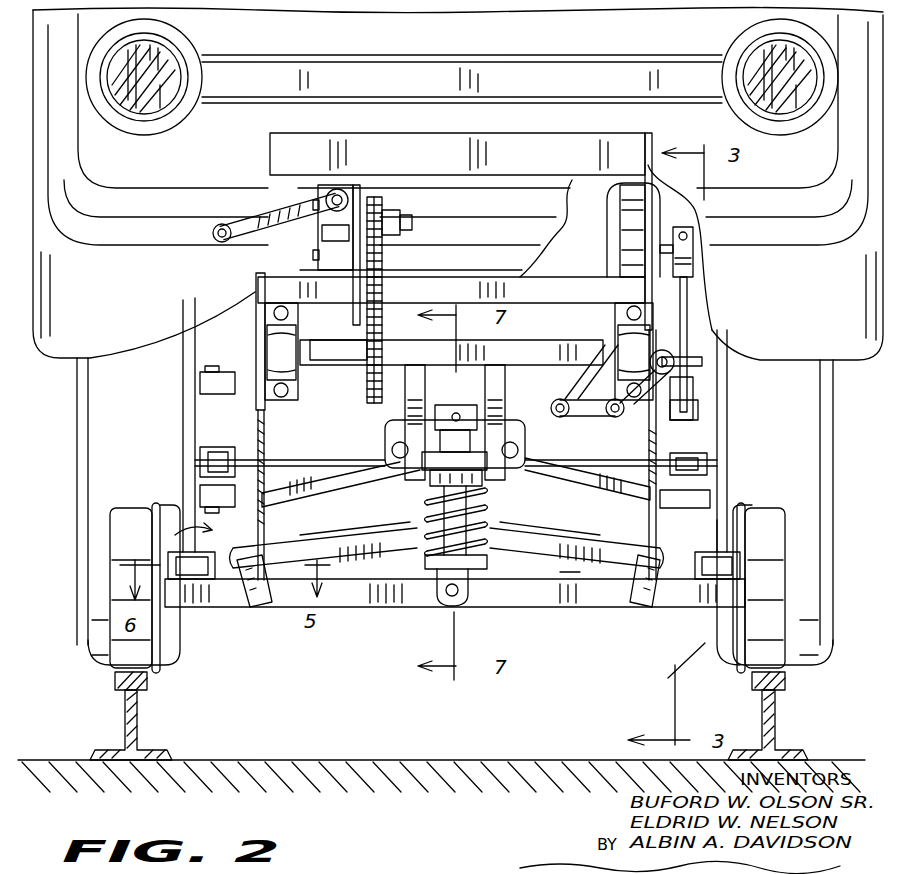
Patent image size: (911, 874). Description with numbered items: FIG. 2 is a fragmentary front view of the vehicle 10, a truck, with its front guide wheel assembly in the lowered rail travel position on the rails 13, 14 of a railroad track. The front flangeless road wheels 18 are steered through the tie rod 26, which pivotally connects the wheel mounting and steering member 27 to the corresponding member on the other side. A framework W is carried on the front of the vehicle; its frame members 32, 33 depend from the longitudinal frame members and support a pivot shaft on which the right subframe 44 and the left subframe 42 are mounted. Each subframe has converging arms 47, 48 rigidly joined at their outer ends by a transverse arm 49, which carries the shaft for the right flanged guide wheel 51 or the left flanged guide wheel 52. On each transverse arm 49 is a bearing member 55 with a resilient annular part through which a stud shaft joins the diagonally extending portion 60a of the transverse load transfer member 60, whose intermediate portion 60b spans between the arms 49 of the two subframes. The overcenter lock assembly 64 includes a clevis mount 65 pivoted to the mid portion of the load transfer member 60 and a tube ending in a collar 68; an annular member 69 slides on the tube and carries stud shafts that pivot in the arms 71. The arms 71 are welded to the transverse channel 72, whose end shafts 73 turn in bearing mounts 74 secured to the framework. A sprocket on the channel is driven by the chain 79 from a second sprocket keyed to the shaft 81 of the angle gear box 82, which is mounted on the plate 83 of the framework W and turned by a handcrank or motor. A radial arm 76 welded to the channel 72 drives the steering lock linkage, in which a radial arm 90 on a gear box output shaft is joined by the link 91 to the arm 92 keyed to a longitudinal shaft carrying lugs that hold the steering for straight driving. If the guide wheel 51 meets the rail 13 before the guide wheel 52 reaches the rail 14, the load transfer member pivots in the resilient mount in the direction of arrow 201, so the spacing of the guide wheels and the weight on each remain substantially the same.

The vehicle 10 is at (38, 360).
The rail 13 is at (125, 715).
The rail 14 is at (778, 715).
The front flangeless road wheels 18 is at (133, 404).
The tie rod 26 is at (308, 462).
The wheel mounting and steering member 27 is at (205, 425).
The frame member 32 is at (268, 448).
The frame member 33 is at (718, 520).
The left subframe 42 is at (560, 535).
The right subframe 44 is at (342, 528).
The arm 47 is at (575, 573).
The arm 48 is at (280, 545).
The transverse arm 49 is at (215, 606).
The right flanged guide wheel 51 is at (120, 528).
The flanged guide wheel 52 is at (835, 560).
The bearing member 55 is at (735, 555).
The transverse load transfer member 60 is at (600, 606).
The diagonally extending portion 60a is at (265, 606).
The intermediate portion 60b is at (395, 606).
The overcenter lock assembly 64 is at (488, 512).
The clevis mount 65 is at (468, 606).
The collar 68 is at (472, 410).
The annular member 69 is at (425, 476).
The arm 71 is at (405, 412).
The transverse channel 72 is at (575, 340).
The transverse shaft 73 is at (306, 345).
The bearing mount 74 is at (256, 365).
The radial arm 76 is at (522, 365).
The chain 79 is at (378, 280).
The shaft 81 is at (410, 222).
The angle gear box 82 is at (345, 185).
The plate 83 is at (382, 185).
The radial arm 90 is at (606, 416).
The link 91 is at (595, 419).
The arm 92 is at (628, 412).
The arrow 201 is at (174, 525).
The framework W is at (512, 150).